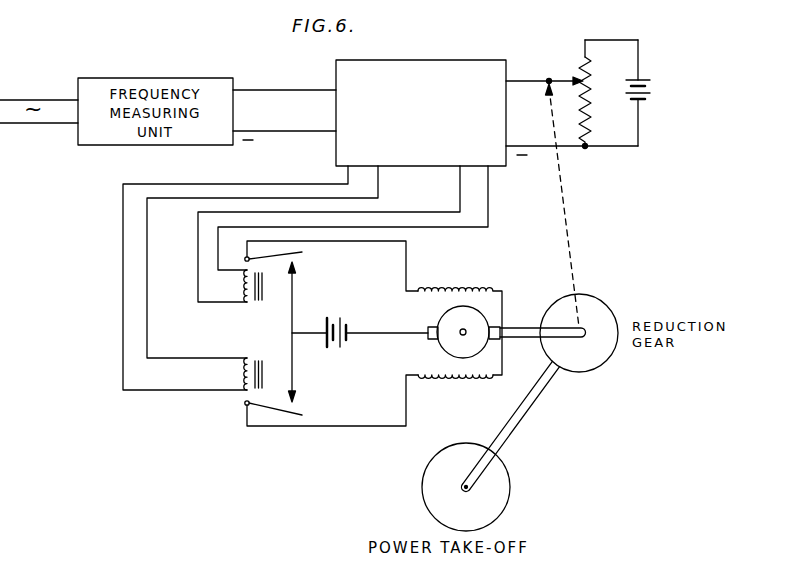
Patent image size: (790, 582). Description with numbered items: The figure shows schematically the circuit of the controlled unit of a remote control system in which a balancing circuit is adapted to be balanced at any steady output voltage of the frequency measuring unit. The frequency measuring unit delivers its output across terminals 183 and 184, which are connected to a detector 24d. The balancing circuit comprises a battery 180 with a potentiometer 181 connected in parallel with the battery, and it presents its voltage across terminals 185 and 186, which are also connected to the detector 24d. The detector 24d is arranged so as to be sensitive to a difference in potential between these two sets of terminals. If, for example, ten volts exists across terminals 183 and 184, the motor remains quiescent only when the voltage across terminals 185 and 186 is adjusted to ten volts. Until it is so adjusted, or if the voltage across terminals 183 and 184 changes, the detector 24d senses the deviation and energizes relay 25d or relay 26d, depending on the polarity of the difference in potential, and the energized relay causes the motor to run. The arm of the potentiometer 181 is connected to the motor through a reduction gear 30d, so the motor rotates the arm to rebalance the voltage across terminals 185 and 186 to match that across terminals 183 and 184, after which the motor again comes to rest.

The terminal of the frequency measuring unit 183 is at (276, 81).
The terminal of the frequency measuring unit 184 is at (288, 132).
The detector 24d is at (425, 52).
The terminal of the balancing circuit 185 is at (536, 79).
The terminal of the balancing circuit 186 is at (542, 148).
The potentiometer 181 is at (590, 72).
The battery 180 is at (650, 92).
The relay 25d is at (232, 301).
The relay 26d is at (241, 358).
The reduction gear 30d is at (605, 355).